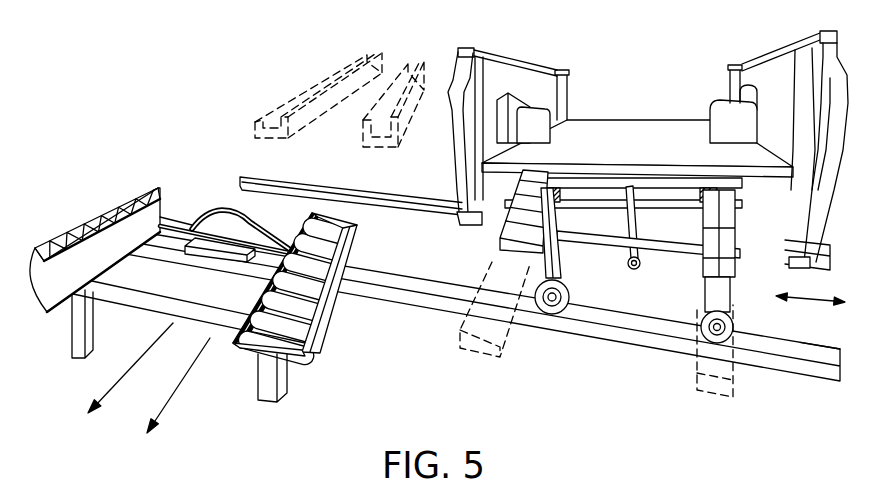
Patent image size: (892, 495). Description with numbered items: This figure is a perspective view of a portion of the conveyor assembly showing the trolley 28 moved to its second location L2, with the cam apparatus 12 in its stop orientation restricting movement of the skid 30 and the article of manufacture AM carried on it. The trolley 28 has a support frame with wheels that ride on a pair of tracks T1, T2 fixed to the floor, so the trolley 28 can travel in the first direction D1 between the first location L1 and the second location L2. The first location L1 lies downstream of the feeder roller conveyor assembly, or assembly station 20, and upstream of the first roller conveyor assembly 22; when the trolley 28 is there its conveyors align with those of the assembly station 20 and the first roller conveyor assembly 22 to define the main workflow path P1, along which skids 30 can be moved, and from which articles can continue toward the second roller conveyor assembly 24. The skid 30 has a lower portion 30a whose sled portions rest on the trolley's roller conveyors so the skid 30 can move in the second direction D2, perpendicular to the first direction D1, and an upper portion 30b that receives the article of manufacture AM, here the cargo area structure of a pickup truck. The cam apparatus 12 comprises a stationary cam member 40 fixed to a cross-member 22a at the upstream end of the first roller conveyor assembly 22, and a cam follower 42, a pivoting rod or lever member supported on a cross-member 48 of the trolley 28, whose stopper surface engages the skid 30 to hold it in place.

The cam apparatus 12 is at (202, 214).
The feeder roller conveyor assembly (assembly station) 20 is at (277, 95).
The first roller conveyor assembly 22 is at (86, 213).
The cross-member 22a is at (238, 236).
The second roller conveyor assembly 24 is at (518, 338).
The trolley 28 is at (740, 275).
The skid 30 is at (623, 190).
The lower portion 30a is at (565, 204).
The upper portion 30b is at (543, 167).
The stationary cam member 40 is at (225, 209).
The cam follower 42 is at (617, 240).
The cross-member 48 is at (663, 247).
The article of manufacture AM is at (634, 206).
The track T1 is at (332, 190).
The track T2 is at (425, 281).
The first location L1 is at (420, 243).
The second location L2 is at (790, 328).
The main workflow path P1 is at (133, 365).
The first direction D1 is at (803, 302).
The second direction D2 is at (187, 380).